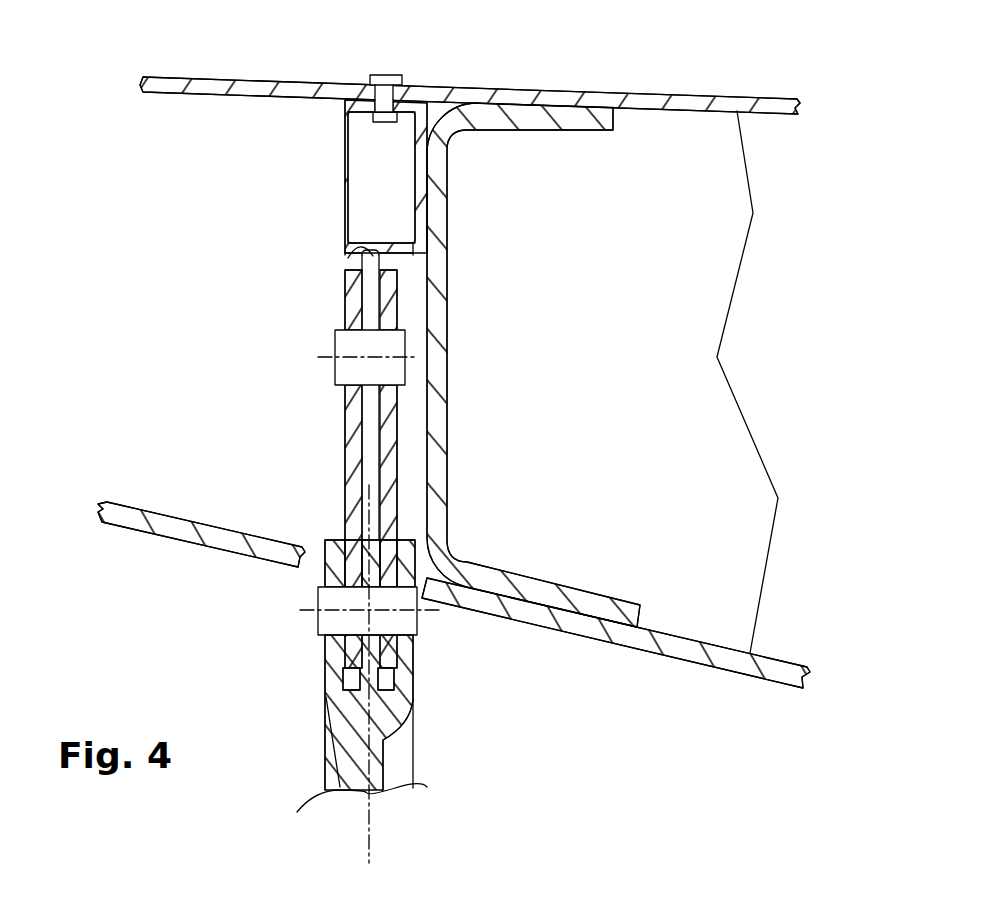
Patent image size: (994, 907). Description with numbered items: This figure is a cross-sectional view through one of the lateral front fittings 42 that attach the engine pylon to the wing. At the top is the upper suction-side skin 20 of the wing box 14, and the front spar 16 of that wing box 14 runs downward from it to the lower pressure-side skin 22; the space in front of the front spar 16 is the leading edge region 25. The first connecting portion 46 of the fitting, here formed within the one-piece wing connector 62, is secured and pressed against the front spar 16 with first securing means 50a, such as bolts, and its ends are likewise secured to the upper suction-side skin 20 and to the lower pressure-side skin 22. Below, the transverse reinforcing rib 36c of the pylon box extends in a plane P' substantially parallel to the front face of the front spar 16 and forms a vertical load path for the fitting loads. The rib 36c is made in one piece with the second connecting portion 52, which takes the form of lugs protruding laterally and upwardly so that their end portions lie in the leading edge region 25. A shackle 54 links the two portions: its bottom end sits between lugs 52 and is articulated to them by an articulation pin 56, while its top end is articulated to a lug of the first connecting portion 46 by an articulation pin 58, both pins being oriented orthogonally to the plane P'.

The wing box 14 is at (764, 404).
The front spar 16 is at (440, 270).
The upper suction-side skin 20 is at (303, 84).
The lower pressure-side skin 22 is at (662, 644).
The leading edge region 25 is at (216, 442).
The transverse reinforcing rib 36c is at (430, 731).
The lateral front fitting 42 is at (294, 221).
The first connecting portion 46 is at (347, 256).
The first securing means 50a is at (388, 75).
The second connecting portion 52 is at (405, 537).
The shackle 54 is at (385, 415).
The articulation pin 56 is at (333, 618).
The articulation pin 58 is at (348, 373).
The wing connector 62 is at (336, 205).
The plane P' is at (328, 674).